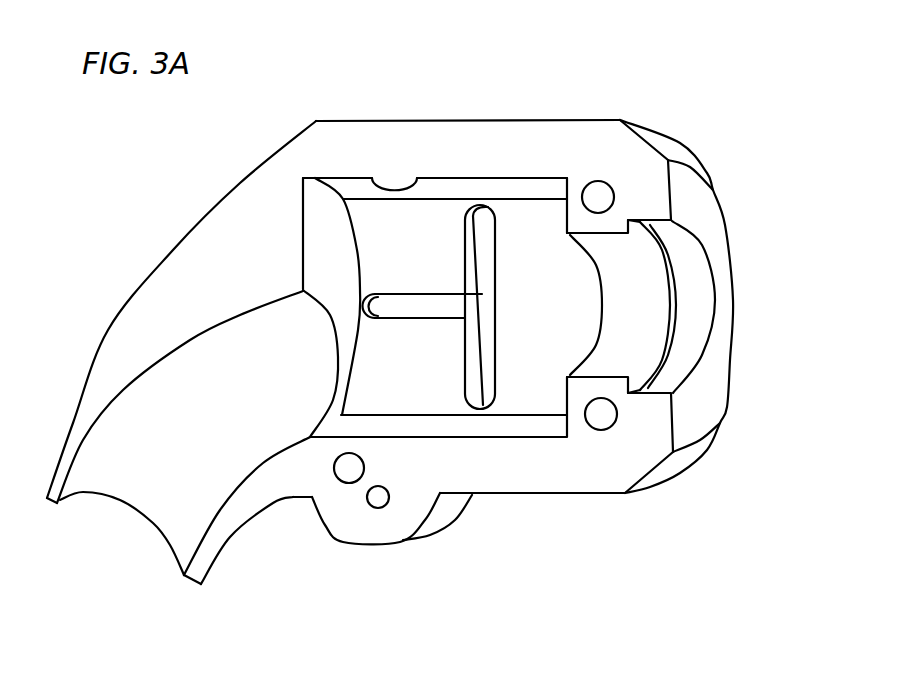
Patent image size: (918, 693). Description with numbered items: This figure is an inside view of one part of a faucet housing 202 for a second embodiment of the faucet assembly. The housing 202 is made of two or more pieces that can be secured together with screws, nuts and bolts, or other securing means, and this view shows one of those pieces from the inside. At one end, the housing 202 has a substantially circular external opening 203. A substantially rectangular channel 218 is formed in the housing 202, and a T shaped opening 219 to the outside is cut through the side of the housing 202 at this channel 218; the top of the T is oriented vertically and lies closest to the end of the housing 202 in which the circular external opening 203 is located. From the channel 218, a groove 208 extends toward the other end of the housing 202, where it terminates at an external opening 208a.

The housing 202 is at (315, 122).
The external opening 203 is at (700, 327).
The groove 208 is at (240, 335).
The external opening 208a is at (82, 490).
The channel 218 is at (418, 180).
The T shaped opening 219 is at (488, 361).